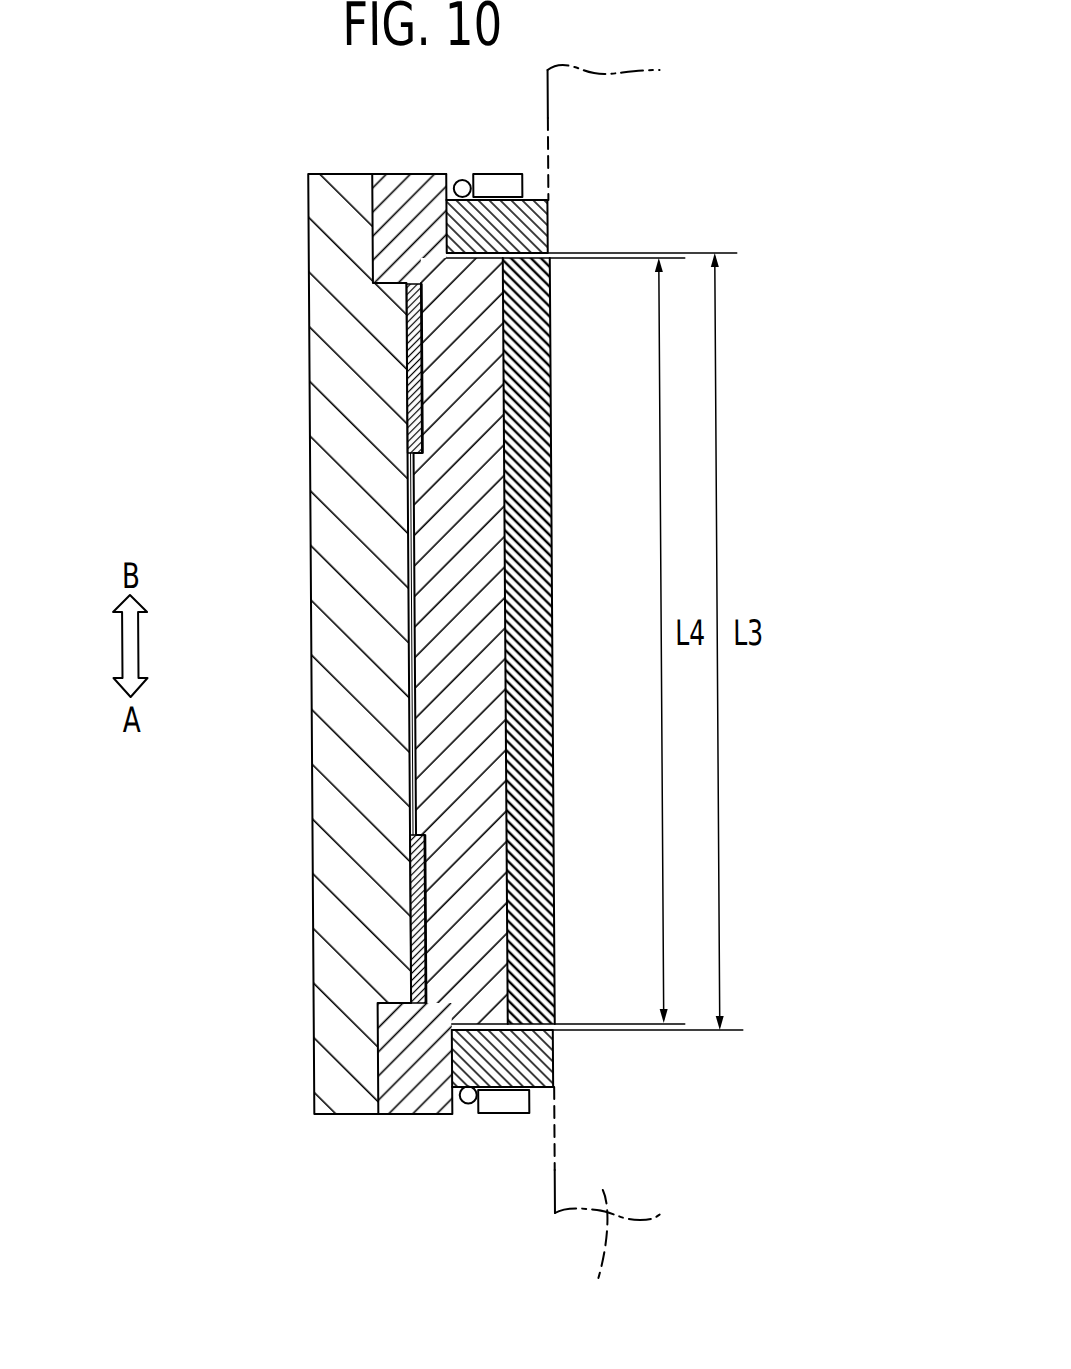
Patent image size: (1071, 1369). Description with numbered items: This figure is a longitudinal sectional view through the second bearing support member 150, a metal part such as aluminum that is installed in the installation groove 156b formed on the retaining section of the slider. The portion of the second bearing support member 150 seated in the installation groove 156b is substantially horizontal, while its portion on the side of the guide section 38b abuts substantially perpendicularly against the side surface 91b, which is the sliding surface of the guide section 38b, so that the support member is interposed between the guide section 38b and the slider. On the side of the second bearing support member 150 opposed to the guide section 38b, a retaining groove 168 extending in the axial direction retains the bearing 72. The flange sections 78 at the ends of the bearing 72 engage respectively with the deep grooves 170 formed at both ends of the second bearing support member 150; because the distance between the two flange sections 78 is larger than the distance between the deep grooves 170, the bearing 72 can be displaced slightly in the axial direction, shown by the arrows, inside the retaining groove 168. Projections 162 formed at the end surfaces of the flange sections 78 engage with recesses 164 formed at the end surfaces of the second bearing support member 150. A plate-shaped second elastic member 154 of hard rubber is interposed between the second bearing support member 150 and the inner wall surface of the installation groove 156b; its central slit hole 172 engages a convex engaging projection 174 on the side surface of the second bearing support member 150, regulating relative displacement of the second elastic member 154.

The second bearing support member 150 is at (485, 408).
The deep grooves 170 is at (452, 212).
The bearing 72 is at (524, 600).
The flange sections 78 is at (553, 225).
The projections 162 is at (466, 180).
The recesses 164 is at (473, 178).
The slit hole 172 is at (419, 465).
The engaging projection 174 is at (430, 604).
The retaining groove 168 is at (507, 771).
The second elastic member 154 is at (407, 924).
The installation groove 156b is at (381, 1038).
The side surface 91b is at (549, 1195).
The guide section 38b is at (606, 1252).